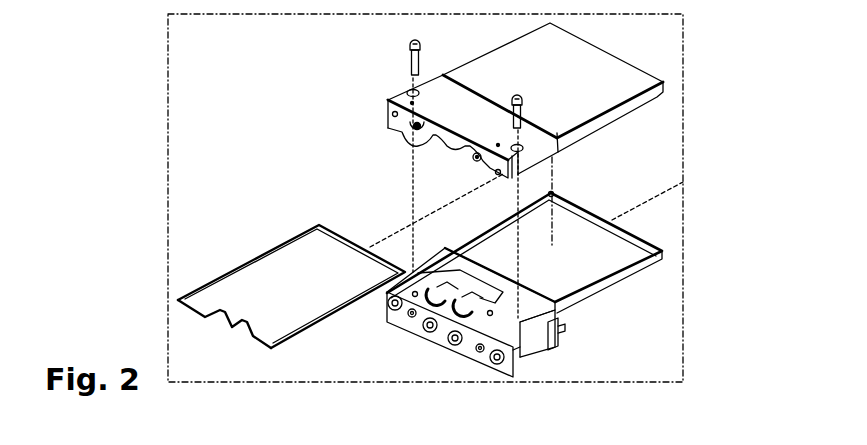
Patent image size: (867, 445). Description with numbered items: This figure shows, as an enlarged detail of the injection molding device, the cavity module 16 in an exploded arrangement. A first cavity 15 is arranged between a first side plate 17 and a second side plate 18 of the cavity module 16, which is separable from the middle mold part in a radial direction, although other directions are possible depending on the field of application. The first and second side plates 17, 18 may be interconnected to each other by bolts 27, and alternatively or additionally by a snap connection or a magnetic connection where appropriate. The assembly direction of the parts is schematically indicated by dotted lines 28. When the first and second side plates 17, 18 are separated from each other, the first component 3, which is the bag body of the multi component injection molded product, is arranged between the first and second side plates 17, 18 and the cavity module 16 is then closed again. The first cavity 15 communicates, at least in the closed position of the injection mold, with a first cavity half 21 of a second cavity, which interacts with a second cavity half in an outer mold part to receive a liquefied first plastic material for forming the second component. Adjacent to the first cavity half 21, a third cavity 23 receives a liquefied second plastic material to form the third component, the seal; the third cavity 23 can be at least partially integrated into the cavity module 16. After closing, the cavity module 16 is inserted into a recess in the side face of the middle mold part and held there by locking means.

The first component 3 is at (245, 286).
The first cavity 15 is at (593, 253).
The cavity module 16 is at (300, 126).
The first side plate 17 is at (621, 91).
The second side plate 18 is at (593, 312).
The first cavity half of the second cavity 21 is at (438, 225).
The third cavity 23 is at (290, 328).
The bolts 27 is at (438, 69).
The dotted lines 28 is at (438, 198).